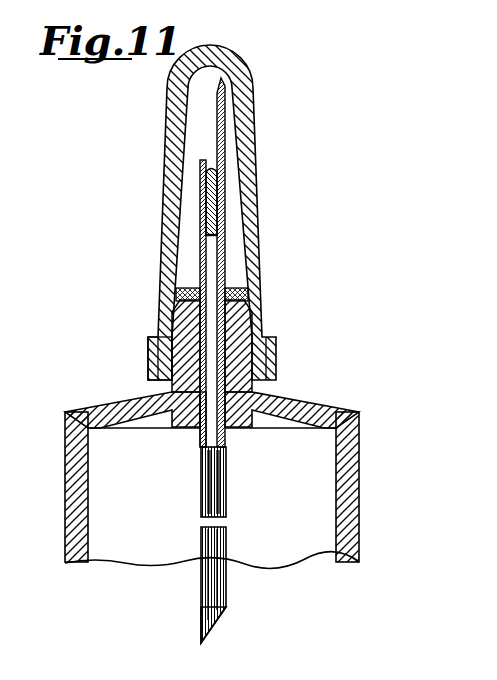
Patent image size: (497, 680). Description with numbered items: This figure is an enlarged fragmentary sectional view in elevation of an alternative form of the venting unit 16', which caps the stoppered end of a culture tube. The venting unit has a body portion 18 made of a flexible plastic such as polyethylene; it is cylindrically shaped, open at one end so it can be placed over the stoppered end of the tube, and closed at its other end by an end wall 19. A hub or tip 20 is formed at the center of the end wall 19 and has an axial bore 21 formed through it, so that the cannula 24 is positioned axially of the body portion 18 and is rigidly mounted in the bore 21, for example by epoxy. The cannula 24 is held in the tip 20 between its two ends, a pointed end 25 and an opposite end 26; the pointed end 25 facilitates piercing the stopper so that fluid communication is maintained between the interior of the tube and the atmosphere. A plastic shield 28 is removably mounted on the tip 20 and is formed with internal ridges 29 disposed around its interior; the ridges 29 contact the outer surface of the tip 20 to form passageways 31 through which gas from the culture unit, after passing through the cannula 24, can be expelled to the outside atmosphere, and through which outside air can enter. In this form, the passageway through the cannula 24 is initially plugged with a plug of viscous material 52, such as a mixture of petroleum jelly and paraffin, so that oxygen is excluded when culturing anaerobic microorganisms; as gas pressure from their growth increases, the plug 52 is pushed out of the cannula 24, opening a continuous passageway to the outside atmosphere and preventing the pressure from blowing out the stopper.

The venting unit 16' is at (237, 344).
The body portion 18 is at (65, 526).
The end wall 19 is at (100, 407).
The hub or tip 20 is at (250, 357).
The axial bore 21 is at (223, 410).
The cannula 24 is at (226, 265).
The pointed end 25 is at (213, 623).
The end 26 is at (200, 158).
The plastic shield 28 is at (165, 179).
The internal ridges 29 is at (248, 300).
The passageways 31 is at (148, 360).
The plug of viscous material 52 is at (220, 193).